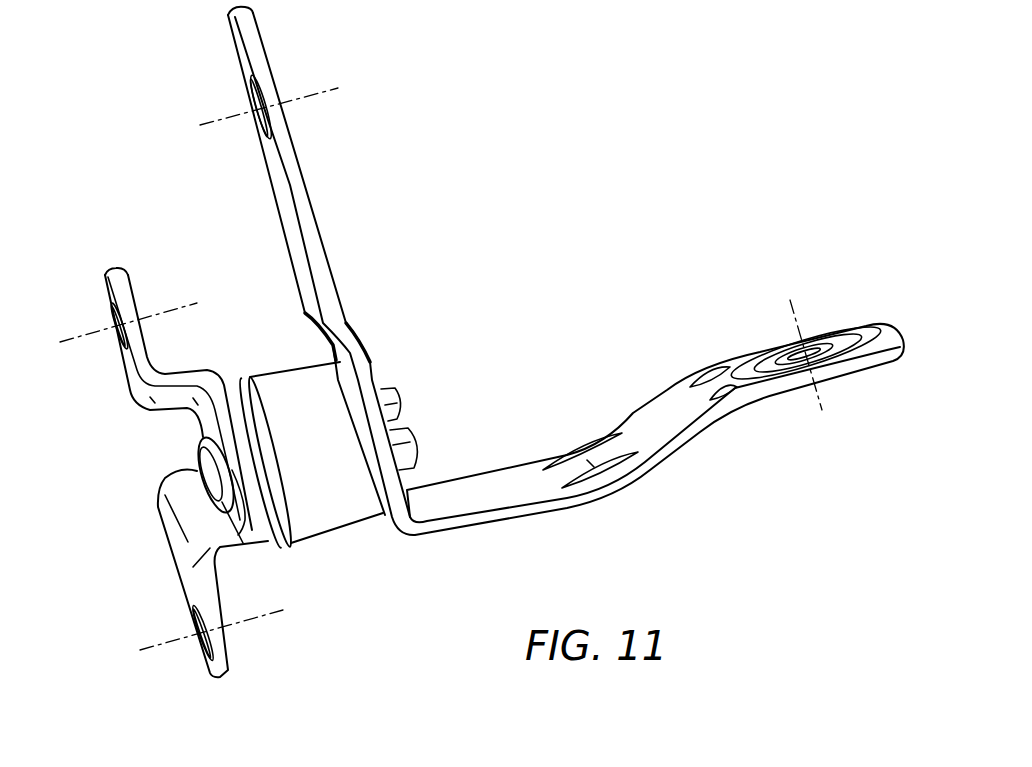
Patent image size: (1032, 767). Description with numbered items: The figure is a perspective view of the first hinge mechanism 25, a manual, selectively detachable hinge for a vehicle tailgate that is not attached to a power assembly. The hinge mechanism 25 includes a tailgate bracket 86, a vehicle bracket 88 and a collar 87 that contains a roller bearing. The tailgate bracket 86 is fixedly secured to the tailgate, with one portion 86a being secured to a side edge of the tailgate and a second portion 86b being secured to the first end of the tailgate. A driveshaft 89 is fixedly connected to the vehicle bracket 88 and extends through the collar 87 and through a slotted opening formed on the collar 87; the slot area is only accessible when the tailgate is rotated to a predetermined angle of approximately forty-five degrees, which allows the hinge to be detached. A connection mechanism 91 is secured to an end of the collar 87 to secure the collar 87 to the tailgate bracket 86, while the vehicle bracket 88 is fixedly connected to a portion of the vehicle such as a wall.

The first hinge mechanism 25 is at (637, 145).
The tailgate bracket 86 is at (325, 213).
The one portion of the tailgate bracket 86a is at (298, 147).
The second portion of the tailgate bracket 86b is at (667, 403).
The collar 87 is at (340, 534).
The vehicle bracket 88 is at (120, 392).
The driveshaft 89 is at (226, 485).
The connection mechanism 91 is at (396, 413).